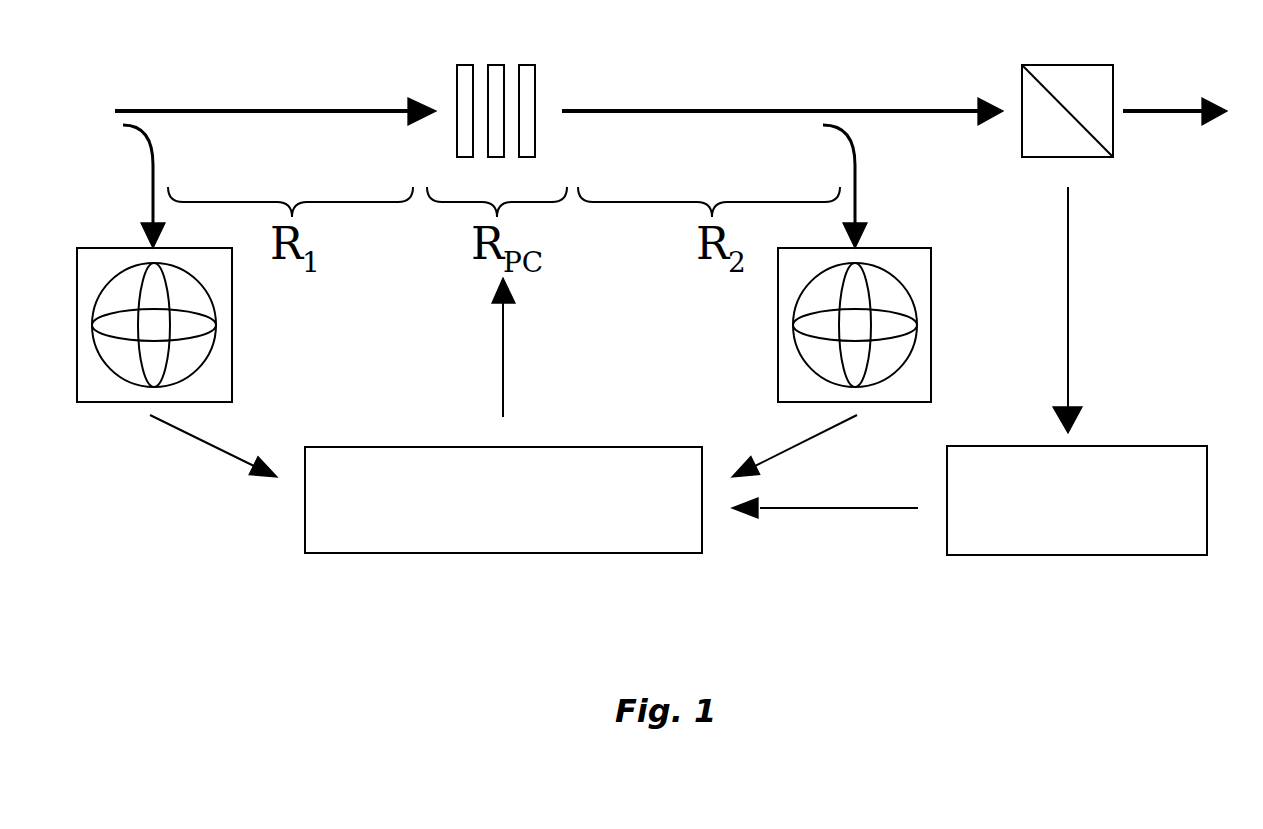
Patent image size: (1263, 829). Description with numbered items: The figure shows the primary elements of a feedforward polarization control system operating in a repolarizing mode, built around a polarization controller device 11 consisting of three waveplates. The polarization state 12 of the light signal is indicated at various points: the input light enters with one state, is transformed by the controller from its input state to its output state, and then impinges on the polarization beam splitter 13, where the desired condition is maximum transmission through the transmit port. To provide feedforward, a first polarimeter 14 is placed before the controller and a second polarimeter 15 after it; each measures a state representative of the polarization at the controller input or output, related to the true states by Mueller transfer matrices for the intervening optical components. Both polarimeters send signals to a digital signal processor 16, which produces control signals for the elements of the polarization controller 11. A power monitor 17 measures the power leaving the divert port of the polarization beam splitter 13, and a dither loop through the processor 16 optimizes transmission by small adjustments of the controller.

The polarization controller device 11 is at (465, 63).
The polarization state 12 is at (63, 80).
The polarization beam splitter 13 is at (1075, 80).
The first polarimeter 14 is at (223, 300).
The second polarimeter 15 is at (923, 300).
The digital signal processor 16 is at (532, 545).
The power monitor 17 is at (1063, 545).